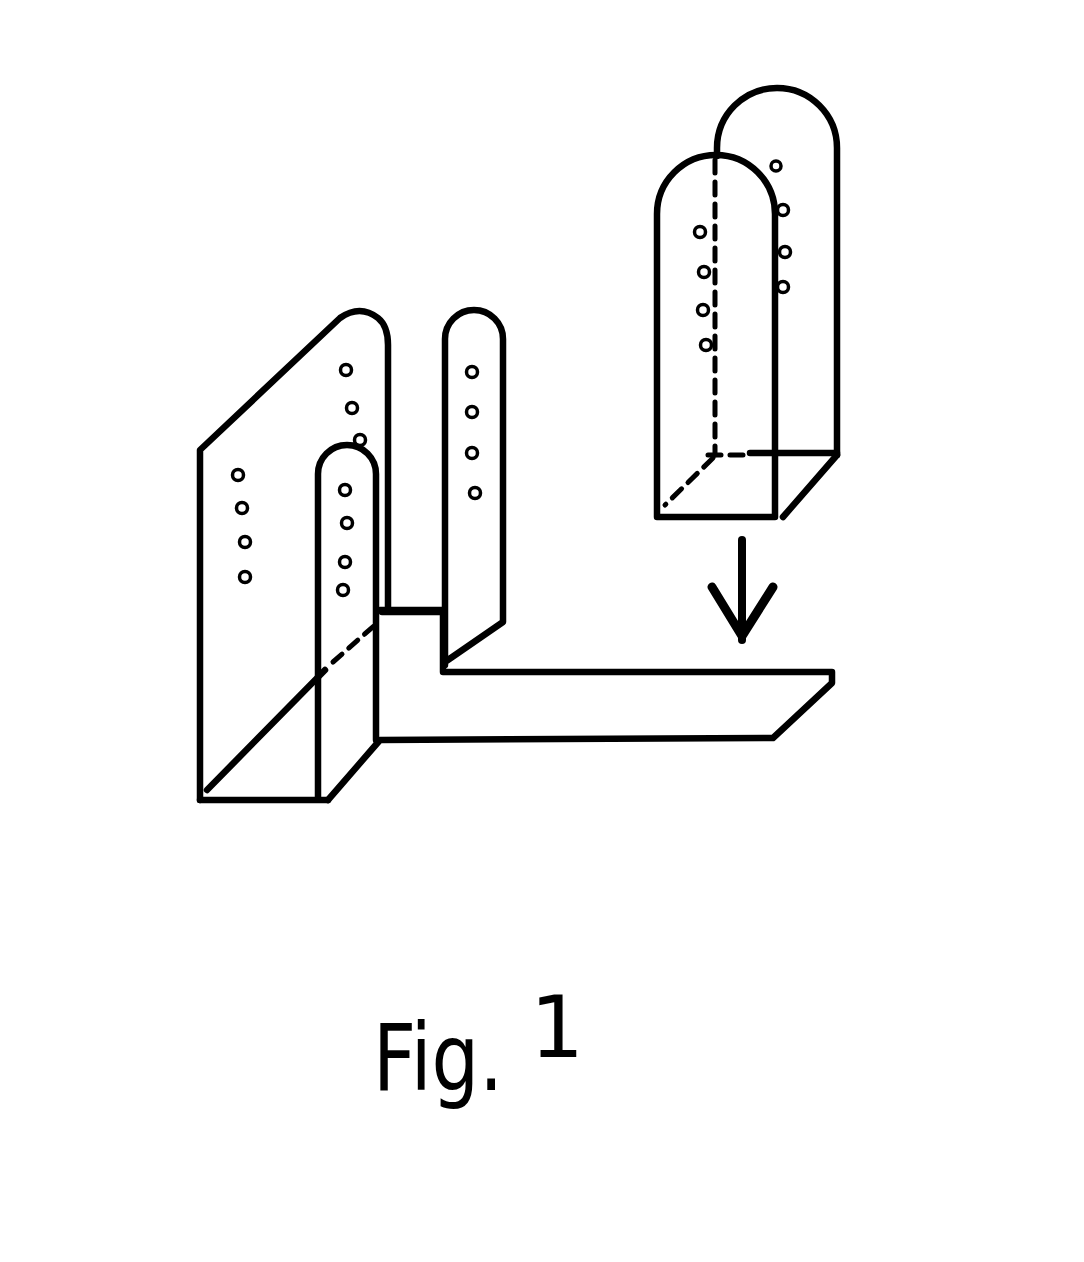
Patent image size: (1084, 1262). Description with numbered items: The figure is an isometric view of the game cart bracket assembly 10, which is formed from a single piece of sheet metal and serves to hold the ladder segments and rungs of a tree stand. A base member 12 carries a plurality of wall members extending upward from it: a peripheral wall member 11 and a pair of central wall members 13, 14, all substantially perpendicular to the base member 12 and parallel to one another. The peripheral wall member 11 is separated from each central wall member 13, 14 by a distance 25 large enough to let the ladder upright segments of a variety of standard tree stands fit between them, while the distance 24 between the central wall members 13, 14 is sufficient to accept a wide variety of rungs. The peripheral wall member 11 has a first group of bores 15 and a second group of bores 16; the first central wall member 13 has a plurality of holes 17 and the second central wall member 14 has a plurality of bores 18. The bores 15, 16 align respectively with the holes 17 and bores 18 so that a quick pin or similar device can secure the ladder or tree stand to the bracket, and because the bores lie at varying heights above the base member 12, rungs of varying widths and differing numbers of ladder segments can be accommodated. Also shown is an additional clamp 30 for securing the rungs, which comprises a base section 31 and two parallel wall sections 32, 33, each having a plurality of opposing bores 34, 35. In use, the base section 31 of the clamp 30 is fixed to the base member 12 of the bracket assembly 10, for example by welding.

The bracket assembly 10 is at (256, 332).
The peripheral wall member 11 is at (212, 535).
The base member 12 is at (417, 700).
The first central wall member 13 is at (340, 445).
The second central wall member 14 is at (463, 314).
The first group of bores 15 is at (243, 543).
The second group of bores 16 is at (348, 368).
The first central wall plurality of holes 17 is at (345, 523).
The second central wall plurality of bores 18 is at (474, 412).
The distance between central wall members 24 is at (405, 540).
The distance between peripheral wall and central walls 25 is at (230, 703).
The clamp 30 is at (662, 107).
The base section of clamp 31 is at (793, 480).
The first parallel wall section 32 is at (790, 110).
The second parallel wall section 33 is at (680, 158).
The opposing bores of first clamp wall 34 is at (790, 167).
The opposing bores of second clamp wall 35 is at (700, 233).